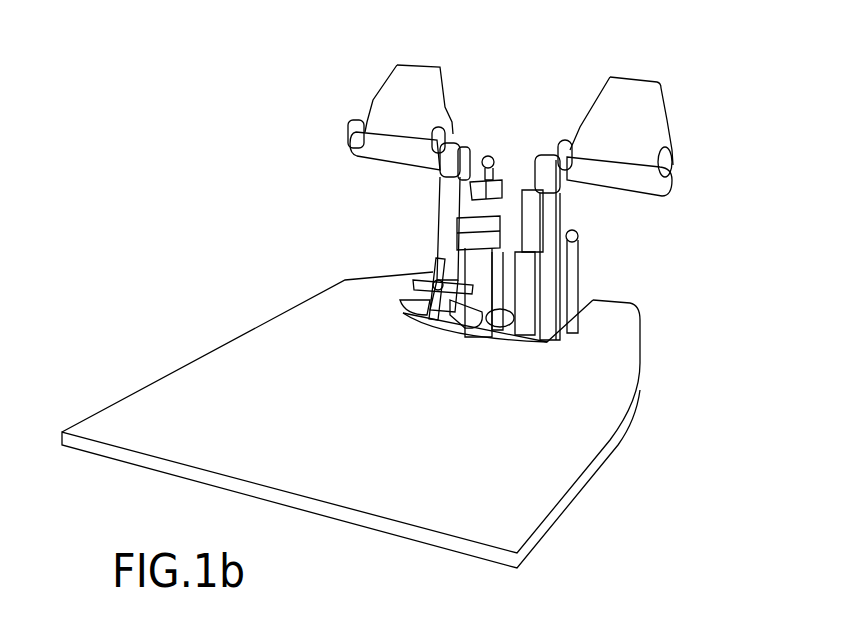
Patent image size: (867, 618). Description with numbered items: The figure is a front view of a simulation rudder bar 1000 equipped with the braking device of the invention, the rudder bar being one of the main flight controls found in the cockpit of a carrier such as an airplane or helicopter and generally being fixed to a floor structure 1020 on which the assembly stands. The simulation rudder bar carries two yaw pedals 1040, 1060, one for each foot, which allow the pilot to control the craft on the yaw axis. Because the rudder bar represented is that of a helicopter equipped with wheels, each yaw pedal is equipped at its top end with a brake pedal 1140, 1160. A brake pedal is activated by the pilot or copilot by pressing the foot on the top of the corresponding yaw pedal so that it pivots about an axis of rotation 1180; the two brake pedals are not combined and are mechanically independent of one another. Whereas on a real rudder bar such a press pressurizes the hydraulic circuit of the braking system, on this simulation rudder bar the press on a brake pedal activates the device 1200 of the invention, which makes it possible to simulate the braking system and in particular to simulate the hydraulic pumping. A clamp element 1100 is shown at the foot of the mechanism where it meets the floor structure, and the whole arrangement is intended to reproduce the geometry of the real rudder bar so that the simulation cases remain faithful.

The adjustable leg rest assembly 1000 is at (132, 183).
The base plate 1020 is at (178, 368).
The yaw pedal 1040 is at (375, 155).
The yaw pedal 1060 is at (613, 180).
The clamp handle 1100 is at (422, 282).
The brake pedal 1140 is at (375, 93).
The brake pedal 1160 is at (667, 118).
The axis of rotation 1180 is at (550, 150).
The braking device 1200 is at (498, 267).